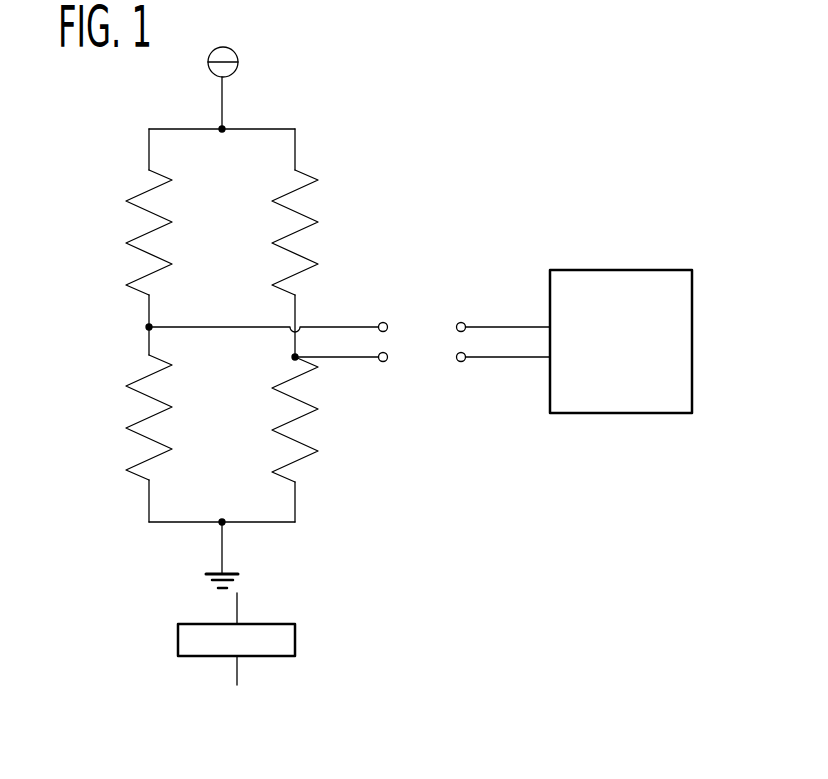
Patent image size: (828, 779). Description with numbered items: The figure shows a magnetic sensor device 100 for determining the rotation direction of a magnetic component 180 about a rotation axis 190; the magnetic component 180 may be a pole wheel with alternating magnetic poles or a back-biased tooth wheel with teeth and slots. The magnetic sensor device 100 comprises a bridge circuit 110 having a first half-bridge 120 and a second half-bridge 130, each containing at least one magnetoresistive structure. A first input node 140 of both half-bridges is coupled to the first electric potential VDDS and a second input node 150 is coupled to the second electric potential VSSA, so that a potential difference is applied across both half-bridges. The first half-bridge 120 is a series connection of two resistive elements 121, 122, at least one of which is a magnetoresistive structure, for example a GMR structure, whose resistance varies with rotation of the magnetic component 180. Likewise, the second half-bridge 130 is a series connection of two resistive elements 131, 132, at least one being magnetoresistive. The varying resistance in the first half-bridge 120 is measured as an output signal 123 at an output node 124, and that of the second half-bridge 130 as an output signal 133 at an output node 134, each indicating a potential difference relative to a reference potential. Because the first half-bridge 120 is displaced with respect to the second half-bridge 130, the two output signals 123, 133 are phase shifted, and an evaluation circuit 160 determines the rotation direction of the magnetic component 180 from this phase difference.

The magnetic sensor device 100 is at (690, 526).
The bridge circuit 110 is at (382, 108).
The first half-bridge 120 is at (175, 122).
The resistive element 121 is at (143, 233).
The resistive element 122 is at (143, 462).
The output signal 123 is at (465, 327).
The output node 124 is at (149, 327).
The second half-bridge 130 is at (320, 122).
The resistive element 131 is at (302, 205).
The resistive element 132 is at (304, 434).
The output signal 133 is at (465, 357).
The output node 134 is at (295, 357).
The first input node 140 is at (222, 132).
The second input node 150 is at (222, 520).
The evaluation circuit 160 is at (621, 341).
The magnetic component 180 is at (296, 637).
The rotation axis 190 is at (240, 600).